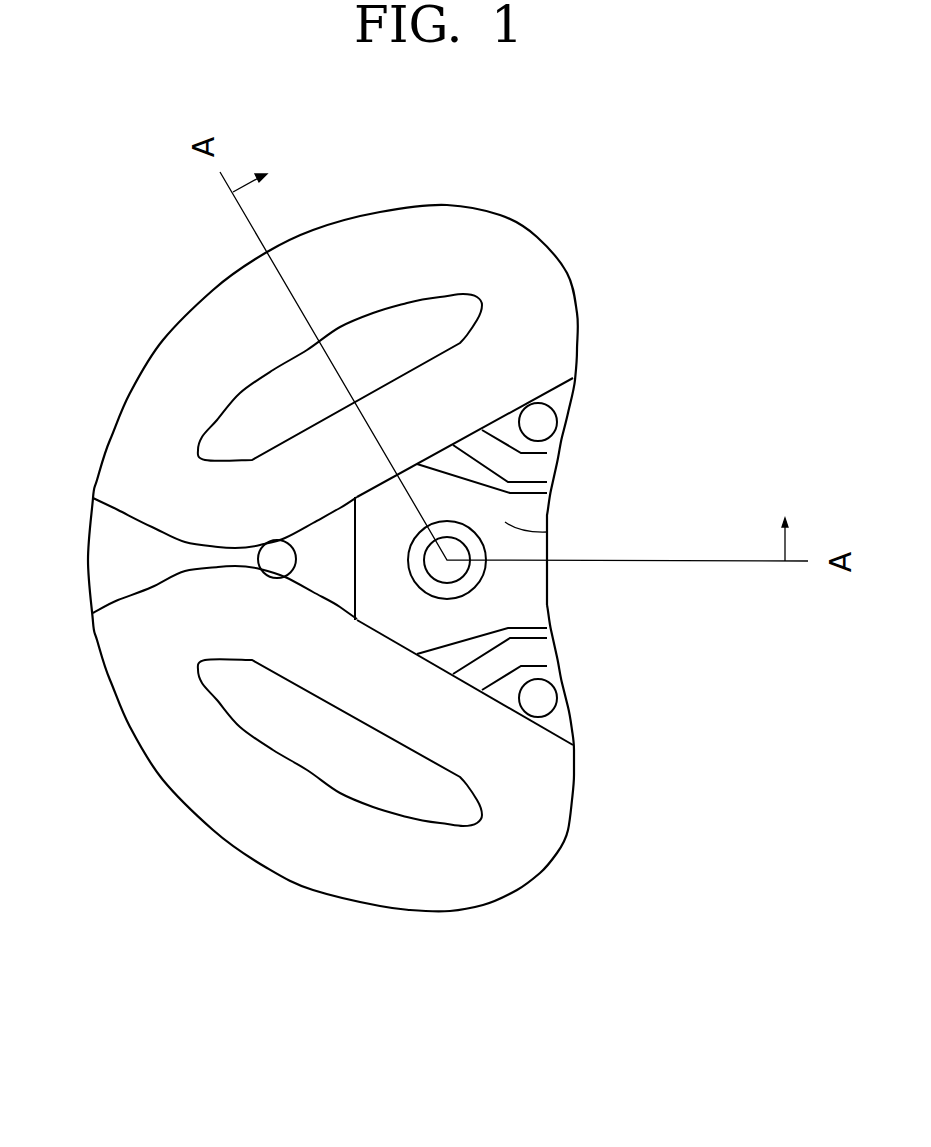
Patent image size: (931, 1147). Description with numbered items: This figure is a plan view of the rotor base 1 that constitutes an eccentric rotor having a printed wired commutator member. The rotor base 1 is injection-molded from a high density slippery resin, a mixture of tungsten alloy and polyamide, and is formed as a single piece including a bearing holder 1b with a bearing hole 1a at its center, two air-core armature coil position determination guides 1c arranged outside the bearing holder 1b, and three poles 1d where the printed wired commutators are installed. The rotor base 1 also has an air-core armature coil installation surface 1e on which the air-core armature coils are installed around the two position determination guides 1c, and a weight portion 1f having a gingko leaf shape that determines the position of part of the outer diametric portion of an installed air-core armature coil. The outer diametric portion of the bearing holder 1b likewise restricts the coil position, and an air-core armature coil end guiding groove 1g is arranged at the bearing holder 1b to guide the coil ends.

The rotor base 1 is at (290, 880).
The bearing hole 1a is at (463, 572).
The bearing holder 1b is at (493, 538).
The air-core armature coil position determination guide 1c is at (271, 740).
The pole 1d is at (550, 417).
The air-core armature coil installation surface 1e is at (163, 724).
The weight portion 1f is at (125, 548).
The air-core armature coil end guiding groove 1g is at (542, 470).